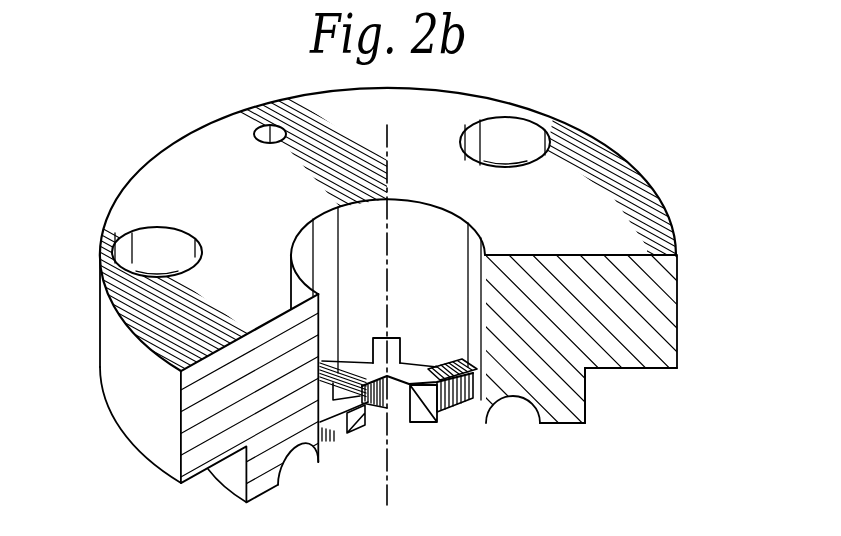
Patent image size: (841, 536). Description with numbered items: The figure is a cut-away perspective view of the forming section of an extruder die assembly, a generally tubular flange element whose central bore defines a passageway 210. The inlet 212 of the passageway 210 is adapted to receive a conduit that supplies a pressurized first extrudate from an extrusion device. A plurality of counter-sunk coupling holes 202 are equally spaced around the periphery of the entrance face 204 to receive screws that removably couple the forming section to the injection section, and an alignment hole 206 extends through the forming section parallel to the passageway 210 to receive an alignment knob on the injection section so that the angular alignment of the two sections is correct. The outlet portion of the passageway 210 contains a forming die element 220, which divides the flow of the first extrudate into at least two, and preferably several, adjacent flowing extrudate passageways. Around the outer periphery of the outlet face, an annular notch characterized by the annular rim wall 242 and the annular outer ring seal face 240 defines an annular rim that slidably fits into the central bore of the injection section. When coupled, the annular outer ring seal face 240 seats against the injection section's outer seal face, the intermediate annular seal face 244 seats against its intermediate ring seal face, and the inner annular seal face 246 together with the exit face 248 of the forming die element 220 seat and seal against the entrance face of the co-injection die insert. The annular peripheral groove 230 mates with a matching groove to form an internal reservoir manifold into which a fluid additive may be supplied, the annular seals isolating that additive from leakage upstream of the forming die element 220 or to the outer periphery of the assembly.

The counter-sunk coupling holes 202 is at (178, 247).
The entrance face 204 is at (203, 136).
The alignment hole 206 is at (272, 146).
The passageway 210 is at (447, 277).
The inlet 212 is at (462, 212).
The forming die element 220 is at (405, 372).
The annular peripheral groove 230 is at (515, 402).
The annular outer ring seal face 240 is at (653, 370).
The annular rim wall 242 is at (587, 395).
The intermediate annular seal face 244 is at (573, 423).
The inner annular seal face 246 is at (486, 426).
The exit face 248 is at (395, 411).